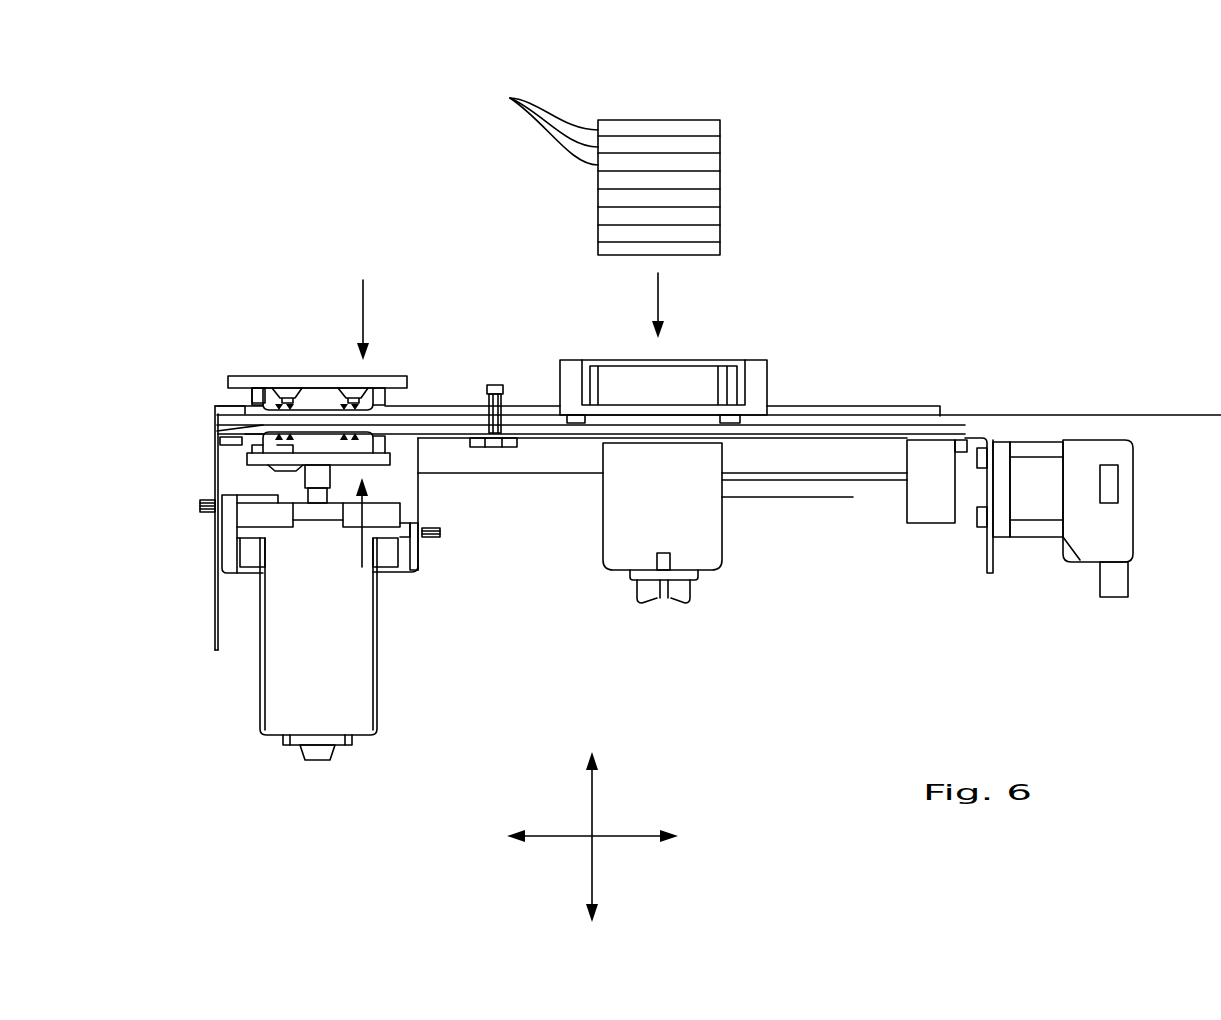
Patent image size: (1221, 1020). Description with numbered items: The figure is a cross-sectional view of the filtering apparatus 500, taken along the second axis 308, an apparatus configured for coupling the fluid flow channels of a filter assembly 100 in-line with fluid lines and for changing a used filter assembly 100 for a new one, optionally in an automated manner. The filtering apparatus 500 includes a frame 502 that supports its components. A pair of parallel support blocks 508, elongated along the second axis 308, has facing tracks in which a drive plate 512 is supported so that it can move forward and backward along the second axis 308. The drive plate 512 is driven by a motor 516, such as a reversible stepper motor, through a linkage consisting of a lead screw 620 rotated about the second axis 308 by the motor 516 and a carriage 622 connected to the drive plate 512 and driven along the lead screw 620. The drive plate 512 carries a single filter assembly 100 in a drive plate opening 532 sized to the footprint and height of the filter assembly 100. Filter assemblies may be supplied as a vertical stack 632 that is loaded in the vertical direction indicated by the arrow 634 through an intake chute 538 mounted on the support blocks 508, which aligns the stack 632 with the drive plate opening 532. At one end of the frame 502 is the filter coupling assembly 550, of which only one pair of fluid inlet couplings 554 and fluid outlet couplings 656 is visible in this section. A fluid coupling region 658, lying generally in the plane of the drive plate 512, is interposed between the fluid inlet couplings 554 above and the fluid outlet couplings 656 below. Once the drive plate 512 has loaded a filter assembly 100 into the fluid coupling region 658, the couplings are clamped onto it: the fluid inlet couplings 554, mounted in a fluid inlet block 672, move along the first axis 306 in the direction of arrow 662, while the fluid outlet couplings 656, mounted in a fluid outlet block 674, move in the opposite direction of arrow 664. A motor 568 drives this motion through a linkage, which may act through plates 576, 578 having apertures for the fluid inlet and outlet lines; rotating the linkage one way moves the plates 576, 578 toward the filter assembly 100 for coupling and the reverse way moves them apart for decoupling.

The filtering apparatus 500 is at (380, 140).
The filter coupling assembly 550 is at (240, 291).
The frame 502 is at (212, 640).
The support blocks 508 is at (895, 405).
The fluid inlet couplings 554 is at (250, 393).
The plate 576 is at (332, 372).
The fluid inlet block 672 is at (383, 397).
The fluid coupling region 658 is at (390, 421).
The arrow 662 is at (363, 298).
The fluid outlet couplings 656 is at (263, 447).
The fluid outlet block 674 is at (377, 447).
The plate 578 is at (390, 467).
The arrow 664 is at (362, 557).
The motor 568 is at (377, 705).
The intake chute 538 is at (770, 365).
The drive plate opening 532 is at (705, 420).
The filter assembly 100 is at (534, 127).
The stack 632 is at (730, 120).
The arrow 634 is at (658, 308).
The lead screw 620 is at (853, 497).
The carriage 622 is at (923, 523).
The drive plate 512 is at (1017, 416).
The motor 516 is at (1037, 538).
The first axis 306 is at (592, 800).
The second axis 308 is at (642, 836).